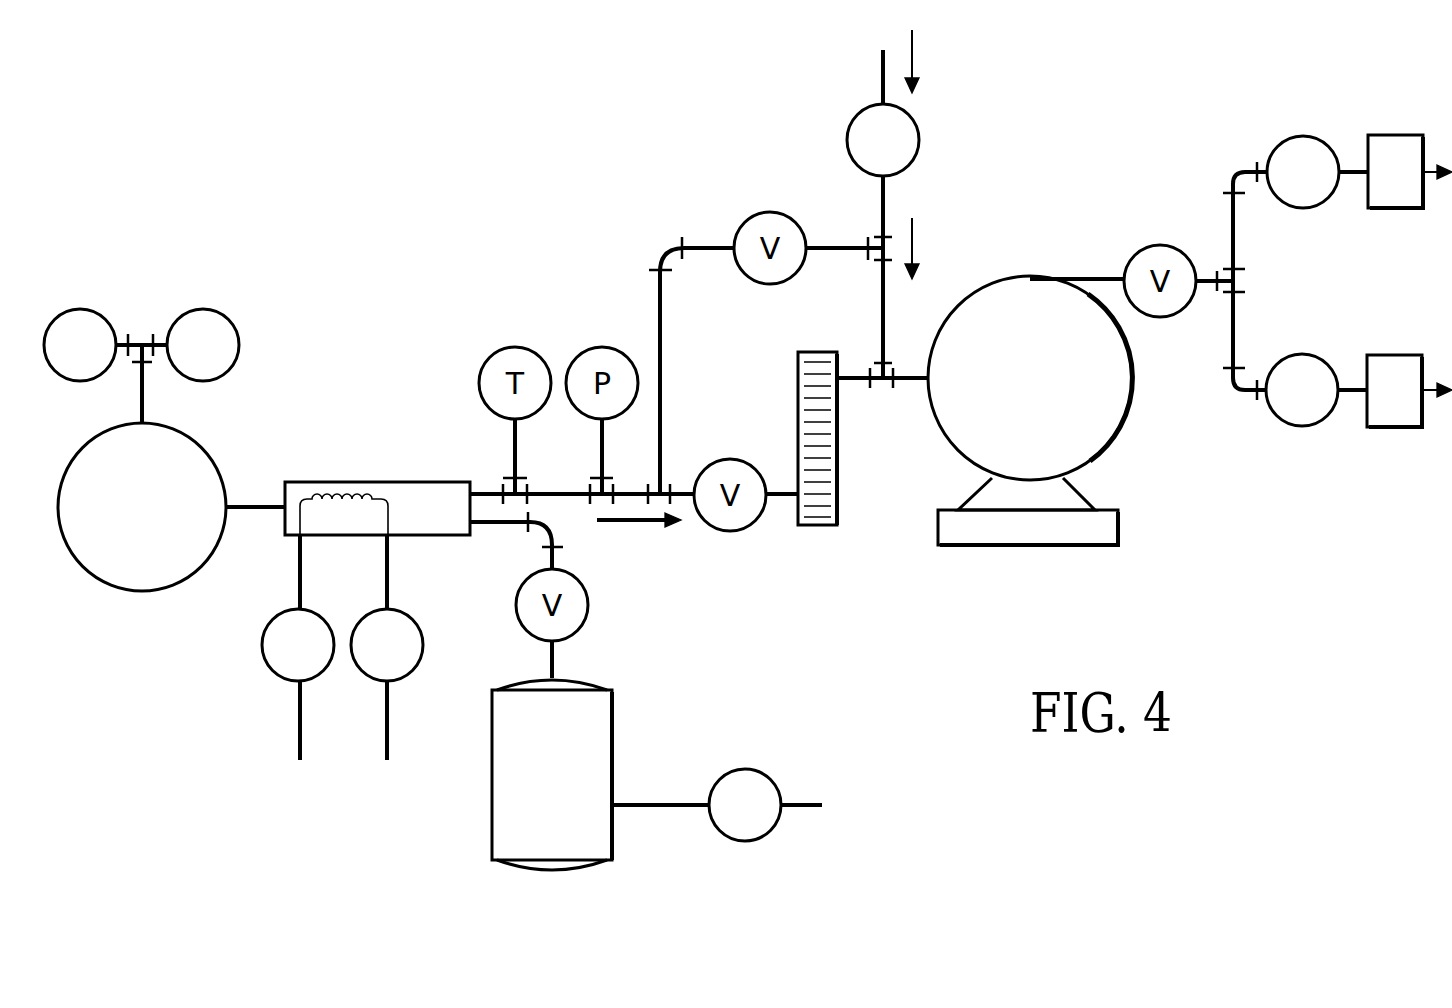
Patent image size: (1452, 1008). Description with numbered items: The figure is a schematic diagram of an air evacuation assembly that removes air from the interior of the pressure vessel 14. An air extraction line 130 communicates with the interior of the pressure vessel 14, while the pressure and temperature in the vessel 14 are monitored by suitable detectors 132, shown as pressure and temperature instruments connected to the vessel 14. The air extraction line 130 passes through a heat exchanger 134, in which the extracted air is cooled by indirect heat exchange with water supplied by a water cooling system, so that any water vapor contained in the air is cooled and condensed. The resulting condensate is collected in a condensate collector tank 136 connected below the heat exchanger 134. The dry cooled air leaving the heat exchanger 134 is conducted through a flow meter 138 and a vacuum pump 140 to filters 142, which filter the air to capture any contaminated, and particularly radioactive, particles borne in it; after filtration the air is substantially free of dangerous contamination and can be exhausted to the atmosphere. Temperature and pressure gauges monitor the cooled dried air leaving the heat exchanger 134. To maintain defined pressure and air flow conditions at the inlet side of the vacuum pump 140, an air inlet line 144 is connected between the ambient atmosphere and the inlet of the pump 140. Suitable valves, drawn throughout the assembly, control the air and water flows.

The pressure vessel 14 is at (72, 462).
The air extraction line 130 is at (252, 503).
The detectors 132 is at (85, 312).
The heat exchanger 134 is at (353, 480).
The condensate collector tank 136 is at (613, 732).
The flow meter 138 is at (822, 527).
The vacuum pump 140 is at (1113, 442).
The filters 142 is at (1397, 135).
The air inlet line 144 is at (878, 212).